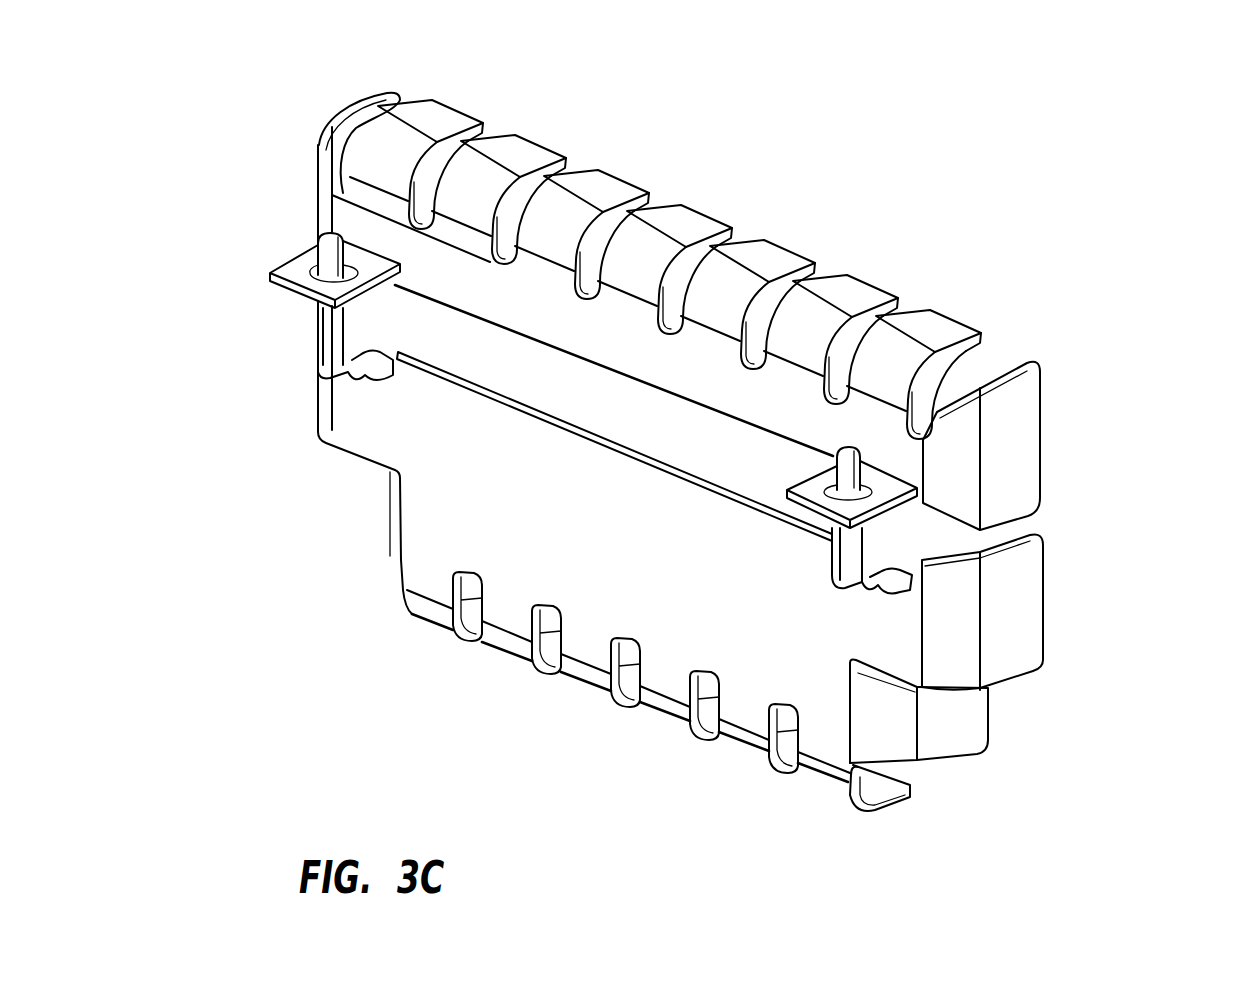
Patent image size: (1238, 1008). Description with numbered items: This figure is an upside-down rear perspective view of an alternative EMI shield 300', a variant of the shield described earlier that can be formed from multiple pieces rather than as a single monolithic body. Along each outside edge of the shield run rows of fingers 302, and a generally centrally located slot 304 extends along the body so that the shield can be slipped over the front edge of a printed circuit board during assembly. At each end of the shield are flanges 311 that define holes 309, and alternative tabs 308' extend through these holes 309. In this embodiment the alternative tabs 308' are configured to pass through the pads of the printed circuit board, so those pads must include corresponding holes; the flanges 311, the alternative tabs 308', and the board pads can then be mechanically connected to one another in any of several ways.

The alternative EMI shield 300' is at (1117, 83).
The fingers 302 is at (492, 82).
The slot 304 is at (630, 415).
The alternative tabs 308' is at (634, 487).
The holes 309 is at (296, 254).
The flanges 311 is at (330, 256).